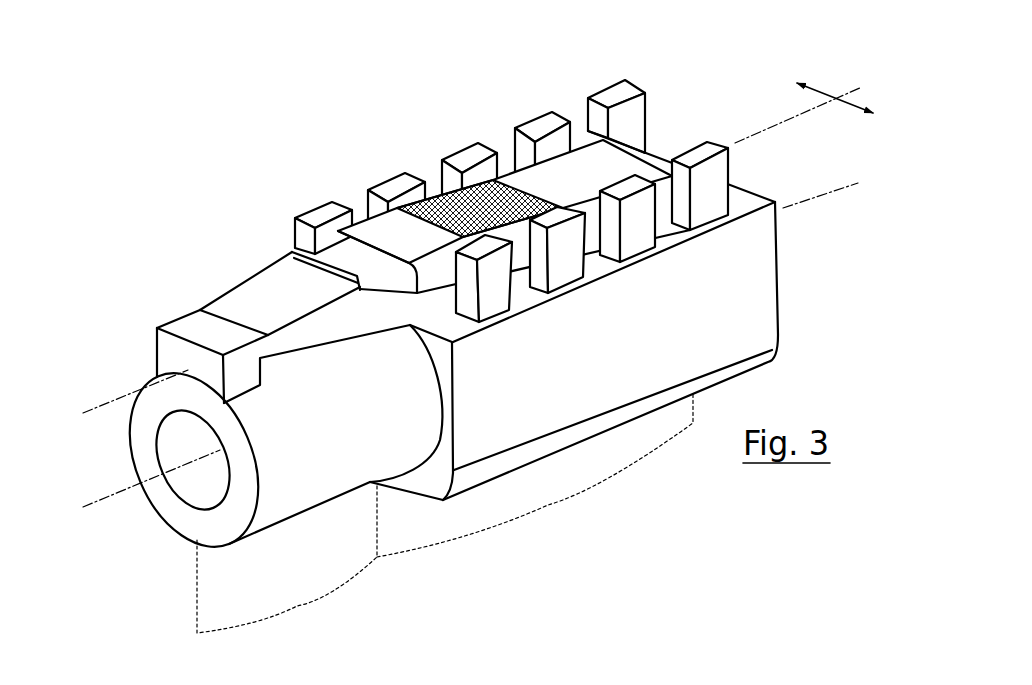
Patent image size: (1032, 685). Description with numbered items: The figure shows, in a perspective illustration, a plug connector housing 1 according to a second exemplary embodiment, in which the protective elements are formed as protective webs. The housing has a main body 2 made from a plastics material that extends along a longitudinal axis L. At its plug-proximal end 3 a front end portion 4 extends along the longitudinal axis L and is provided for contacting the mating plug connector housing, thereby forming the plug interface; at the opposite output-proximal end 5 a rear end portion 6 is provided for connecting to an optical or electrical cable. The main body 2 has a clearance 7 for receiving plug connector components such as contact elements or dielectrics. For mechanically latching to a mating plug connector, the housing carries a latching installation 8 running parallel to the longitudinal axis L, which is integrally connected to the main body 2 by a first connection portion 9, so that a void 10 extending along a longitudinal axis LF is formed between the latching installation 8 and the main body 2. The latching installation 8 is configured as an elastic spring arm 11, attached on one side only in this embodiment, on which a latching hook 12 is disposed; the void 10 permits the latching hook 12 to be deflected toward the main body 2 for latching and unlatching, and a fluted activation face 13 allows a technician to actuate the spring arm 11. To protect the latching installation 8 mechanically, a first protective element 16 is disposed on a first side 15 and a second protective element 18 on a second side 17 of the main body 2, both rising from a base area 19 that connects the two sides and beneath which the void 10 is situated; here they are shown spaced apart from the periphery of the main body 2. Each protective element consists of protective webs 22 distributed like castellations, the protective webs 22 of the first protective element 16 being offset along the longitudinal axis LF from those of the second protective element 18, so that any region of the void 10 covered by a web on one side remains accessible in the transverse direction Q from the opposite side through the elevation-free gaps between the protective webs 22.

The plug connector housing 1 is at (130, 141).
The main body 2 is at (767, 321).
The plug-proximal end 3 is at (156, 324).
The front end portion 4 is at (287, 566).
The output-proximal end 5 is at (620, 88).
The rear end portion 6 is at (535, 475).
The clearance 7 is at (180, 485).
The latching installation 8 is at (437, 210).
The first connection portion 9 is at (166, 357).
The void 10 is at (415, 313).
The spring arm 11 is at (340, 242).
The latching hook 12 is at (285, 262).
The fluted activation face 13 is at (422, 197).
The first side 15 is at (470, 143).
The first protective element 16 is at (551, 108).
The second side 17 is at (640, 303).
The second protective element 18 is at (721, 141).
The base area 19 is at (448, 324).
The protective webs 22 is at (530, 130).
The longitudinal axis L is at (102, 497).
The longitudinal axis of the void LF is at (100, 408).
The transverse direction Q is at (833, 97).